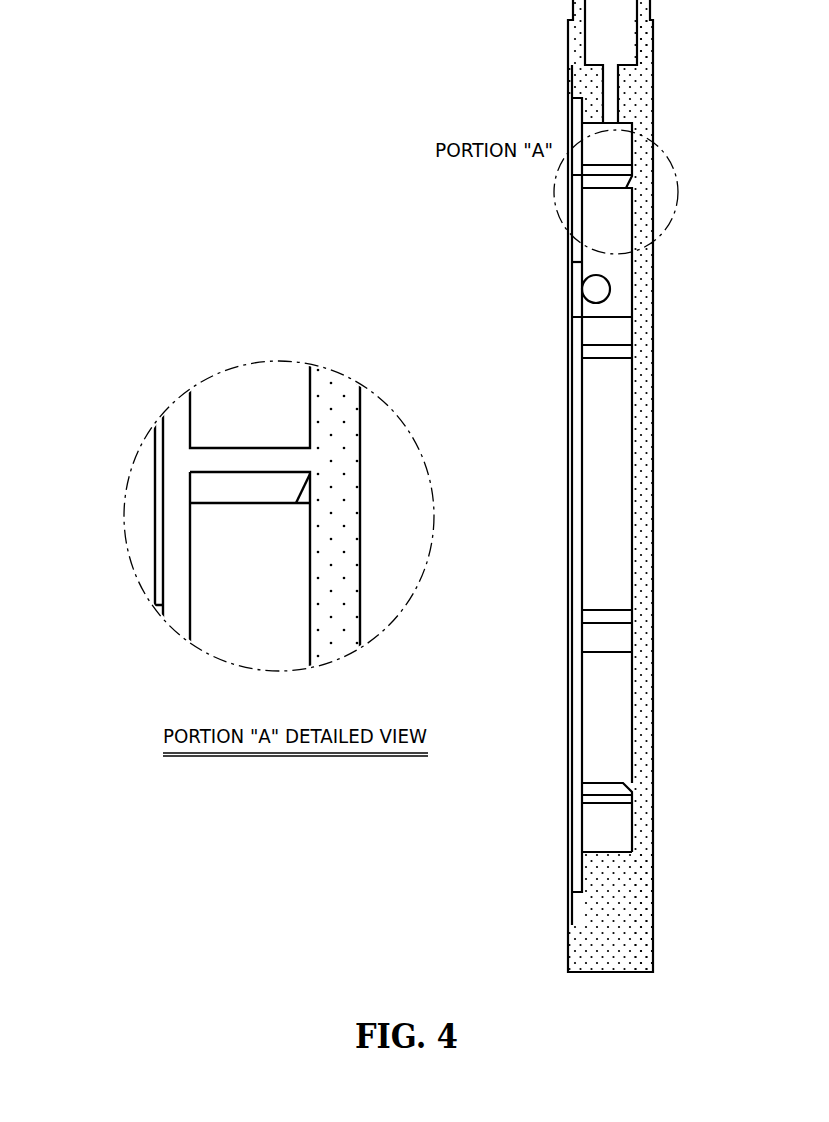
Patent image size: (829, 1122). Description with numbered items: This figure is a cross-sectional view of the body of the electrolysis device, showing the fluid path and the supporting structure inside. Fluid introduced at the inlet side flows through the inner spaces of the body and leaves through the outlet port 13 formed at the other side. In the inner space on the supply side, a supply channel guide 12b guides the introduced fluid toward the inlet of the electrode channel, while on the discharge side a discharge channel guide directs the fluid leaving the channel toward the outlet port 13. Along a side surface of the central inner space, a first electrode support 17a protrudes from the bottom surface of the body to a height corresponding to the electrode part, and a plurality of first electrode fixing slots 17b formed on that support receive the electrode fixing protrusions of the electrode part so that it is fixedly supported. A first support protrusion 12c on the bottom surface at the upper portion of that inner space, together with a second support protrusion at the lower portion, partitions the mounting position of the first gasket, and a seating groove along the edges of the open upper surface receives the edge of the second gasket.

The supply channel guide 12b is at (615, 830).
The first support protrusion 12c is at (627, 790).
The outlet port 13 is at (608, 58).
The first electrode support 17a is at (610, 561).
The first electrode fixing slots 17b is at (612, 617).